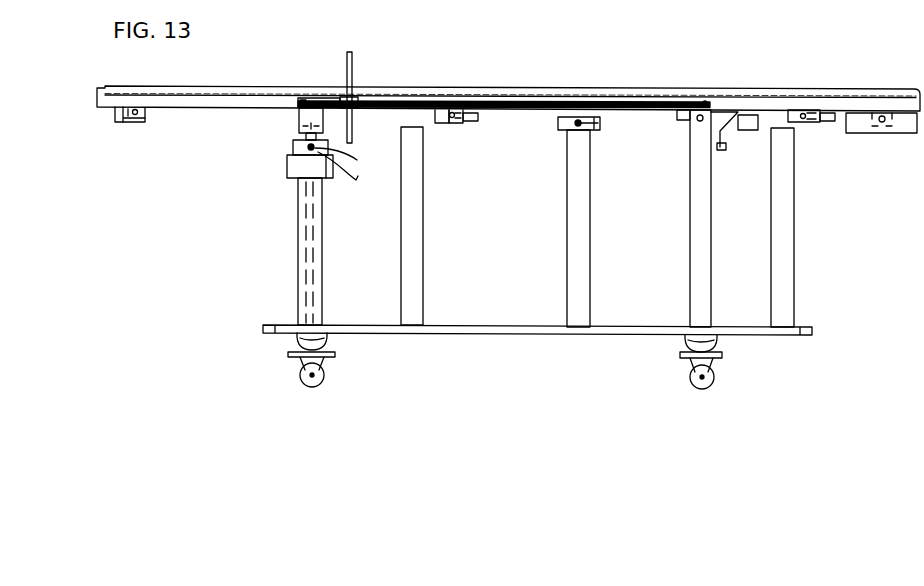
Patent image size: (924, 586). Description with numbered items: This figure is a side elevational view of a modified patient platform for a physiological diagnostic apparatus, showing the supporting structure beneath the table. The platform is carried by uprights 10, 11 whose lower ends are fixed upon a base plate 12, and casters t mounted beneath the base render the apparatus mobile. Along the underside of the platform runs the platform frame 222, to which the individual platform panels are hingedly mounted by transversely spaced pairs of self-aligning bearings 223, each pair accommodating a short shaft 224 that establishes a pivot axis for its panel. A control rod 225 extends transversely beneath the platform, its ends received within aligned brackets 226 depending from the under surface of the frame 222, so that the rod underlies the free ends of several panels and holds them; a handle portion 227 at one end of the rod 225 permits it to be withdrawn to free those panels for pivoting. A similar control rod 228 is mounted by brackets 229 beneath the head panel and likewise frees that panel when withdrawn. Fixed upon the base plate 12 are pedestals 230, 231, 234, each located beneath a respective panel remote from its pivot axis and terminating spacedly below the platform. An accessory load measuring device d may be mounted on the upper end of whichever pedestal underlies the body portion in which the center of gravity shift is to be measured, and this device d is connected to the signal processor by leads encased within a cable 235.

The platform frame 222 is at (114, 98).
The self-aligning bearing 223 is at (122, 122).
The short shaft 224 is at (148, 115).
The control rod 225 is at (452, 125).
The bracket 226 is at (443, 125).
The handle portion 227 is at (478, 117).
The control rod 228 is at (806, 123).
The bracket 229 is at (820, 122).
The pedestal 230 is at (590, 252).
The pedestal 231 is at (795, 270).
The pedestal 234 is at (423, 240).
The cable 235 is at (603, 132).
The upright 10 is at (690, 300).
The upright 11 is at (298, 243).
The base plate 12 is at (430, 334).
The accessory load measuring device d is at (563, 118).
The caster t is at (716, 378).